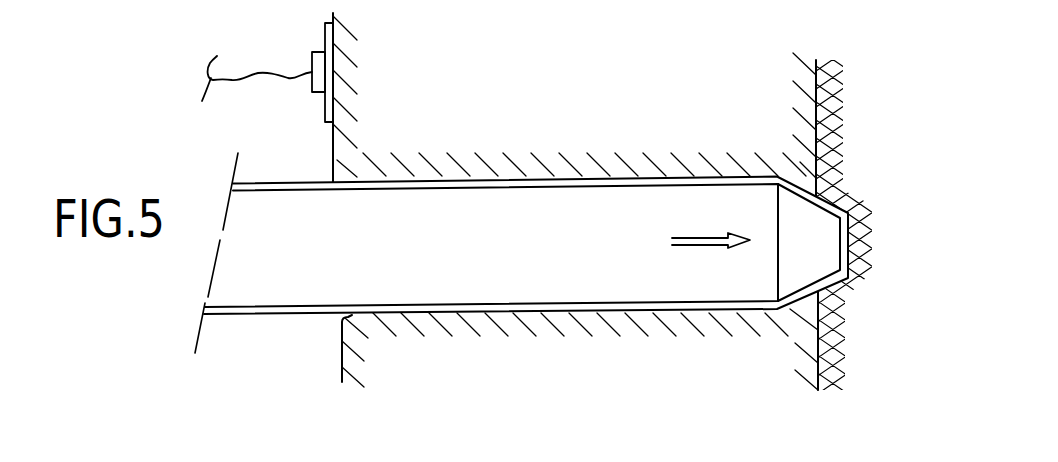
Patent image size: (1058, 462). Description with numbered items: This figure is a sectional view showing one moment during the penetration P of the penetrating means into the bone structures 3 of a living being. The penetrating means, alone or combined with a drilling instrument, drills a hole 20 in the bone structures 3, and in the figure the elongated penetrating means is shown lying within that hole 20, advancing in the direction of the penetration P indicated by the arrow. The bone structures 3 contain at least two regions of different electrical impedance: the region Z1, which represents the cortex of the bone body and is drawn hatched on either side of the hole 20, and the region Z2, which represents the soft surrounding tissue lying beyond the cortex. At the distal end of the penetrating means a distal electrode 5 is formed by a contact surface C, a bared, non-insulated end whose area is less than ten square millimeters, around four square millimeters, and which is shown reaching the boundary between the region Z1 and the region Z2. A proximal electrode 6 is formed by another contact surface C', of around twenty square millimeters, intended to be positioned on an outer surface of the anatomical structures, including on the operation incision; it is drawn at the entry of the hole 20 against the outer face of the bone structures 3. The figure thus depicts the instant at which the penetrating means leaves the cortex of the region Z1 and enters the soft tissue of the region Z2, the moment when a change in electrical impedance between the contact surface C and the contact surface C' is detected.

The hole 20 is at (328, 178).
The bone structures 3 is at (326, 138).
The distal electrode 5 is at (859, 176).
The proximal electrode 6 is at (303, 45).
The contact surface C' is at (371, 64).
The region of first electrical impedance Z1 is at (526, 118).
The region of second electrical impedance Z2 is at (932, 259).
The contact surface C is at (811, 242).
The penetration P is at (695, 237).